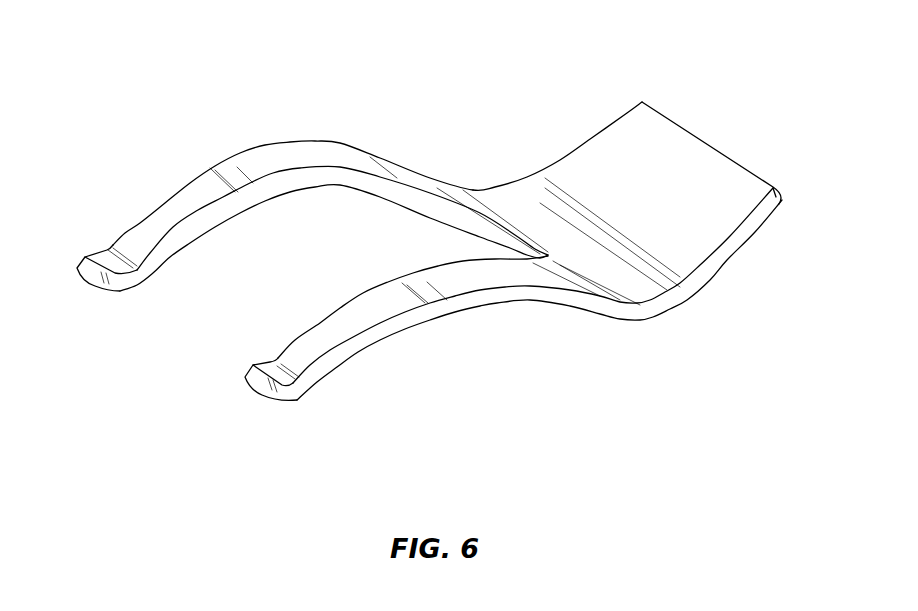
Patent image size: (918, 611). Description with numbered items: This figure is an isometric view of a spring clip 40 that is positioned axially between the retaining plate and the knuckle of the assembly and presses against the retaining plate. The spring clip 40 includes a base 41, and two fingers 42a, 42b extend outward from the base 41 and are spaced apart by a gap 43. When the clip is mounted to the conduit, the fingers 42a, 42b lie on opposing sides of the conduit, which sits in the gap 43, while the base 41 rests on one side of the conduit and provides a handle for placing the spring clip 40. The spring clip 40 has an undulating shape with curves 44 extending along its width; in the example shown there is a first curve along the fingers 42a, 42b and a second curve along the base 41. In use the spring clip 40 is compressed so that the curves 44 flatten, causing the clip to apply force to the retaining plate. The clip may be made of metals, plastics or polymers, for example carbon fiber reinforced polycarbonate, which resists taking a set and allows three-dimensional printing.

The spring clip 40 is at (278, 418).
The base 41 is at (678, 170).
The first finger 42a is at (168, 212).
The second finger 42b is at (348, 325).
The gap 43 is at (208, 326).
The curves 44 is at (288, 155).